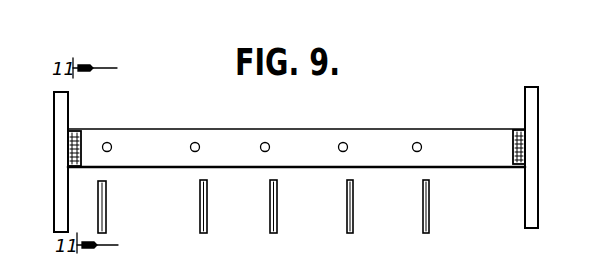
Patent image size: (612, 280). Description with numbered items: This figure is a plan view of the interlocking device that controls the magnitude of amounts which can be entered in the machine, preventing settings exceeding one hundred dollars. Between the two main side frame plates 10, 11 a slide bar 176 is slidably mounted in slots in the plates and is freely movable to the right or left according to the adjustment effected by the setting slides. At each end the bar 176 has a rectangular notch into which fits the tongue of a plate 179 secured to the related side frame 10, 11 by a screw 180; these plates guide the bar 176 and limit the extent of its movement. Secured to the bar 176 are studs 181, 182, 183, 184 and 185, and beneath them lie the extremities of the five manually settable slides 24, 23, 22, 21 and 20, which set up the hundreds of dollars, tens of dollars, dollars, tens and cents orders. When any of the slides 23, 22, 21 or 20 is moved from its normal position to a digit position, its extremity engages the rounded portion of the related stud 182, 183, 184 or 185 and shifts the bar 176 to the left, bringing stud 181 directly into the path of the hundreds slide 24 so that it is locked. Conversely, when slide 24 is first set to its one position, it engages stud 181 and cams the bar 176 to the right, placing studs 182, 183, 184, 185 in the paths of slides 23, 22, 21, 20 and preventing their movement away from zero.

The main side frame plate 10 is at (60, 208).
The main side frame plate 11 is at (532, 199).
The setting slide 20 is at (428, 202).
The setting slide 21 is at (352, 204).
The setting slide 22 is at (275, 204).
The setting slide 23 is at (205, 204).
The setting slide 24 is at (104, 207).
The slide bar 176 is at (308, 130).
The plate 179 is at (77, 132).
The screw 180 is at (80, 158).
The stud 181 is at (110, 143).
The stud 182 is at (197, 143).
The stud 183 is at (267, 143).
The stud 184 is at (345, 143).
The stud 185 is at (420, 143).